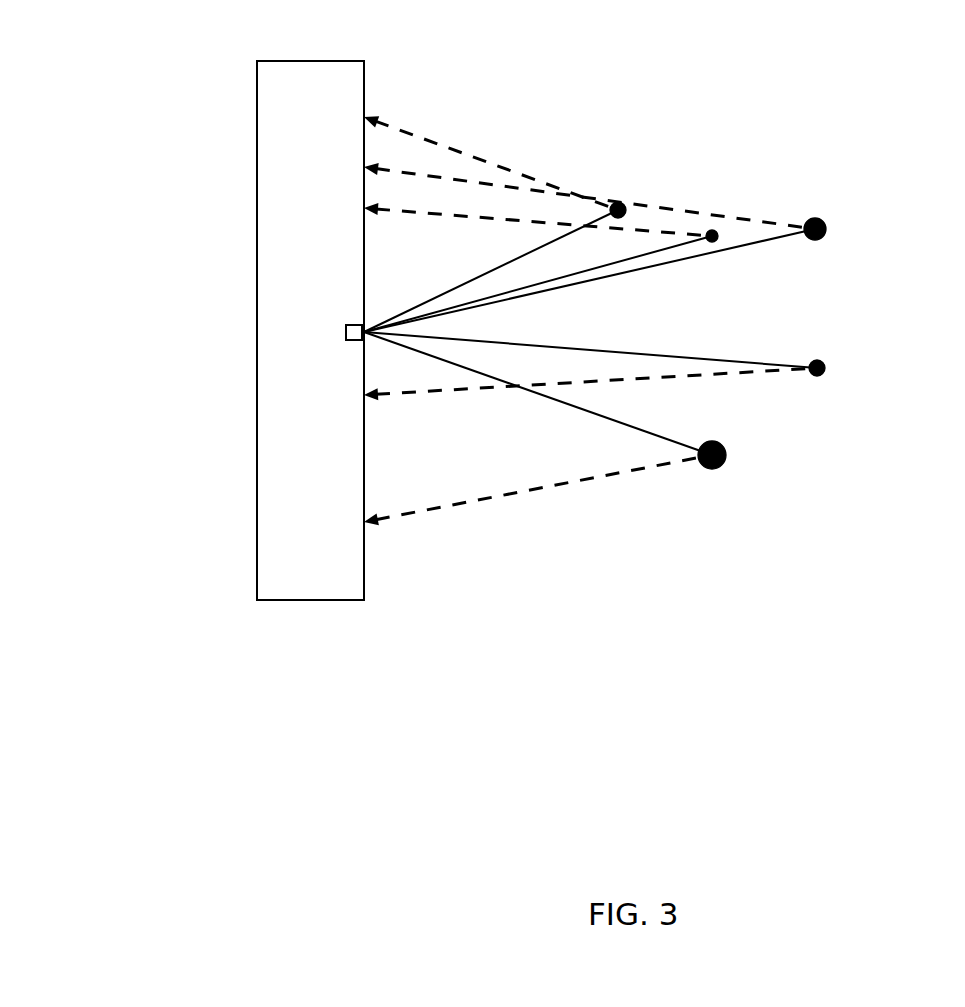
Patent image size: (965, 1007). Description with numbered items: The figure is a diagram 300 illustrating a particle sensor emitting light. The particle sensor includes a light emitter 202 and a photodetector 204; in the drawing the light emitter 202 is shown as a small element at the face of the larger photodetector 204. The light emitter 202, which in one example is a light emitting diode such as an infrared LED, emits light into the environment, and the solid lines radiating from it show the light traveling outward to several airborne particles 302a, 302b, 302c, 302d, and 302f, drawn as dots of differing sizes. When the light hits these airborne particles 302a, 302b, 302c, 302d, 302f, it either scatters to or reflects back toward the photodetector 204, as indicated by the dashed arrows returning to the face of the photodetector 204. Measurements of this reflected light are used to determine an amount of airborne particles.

The diagram 300 is at (122, 51).
The photodetector 204 is at (332, 113).
The light emitter 202 is at (332, 330).
The airborne particle 302a is at (633, 172).
The airborne particle 302b is at (826, 195).
The airborne particle 302c is at (718, 202).
The airborne particle 302d is at (827, 335).
The object / target point 302f is at (733, 478).